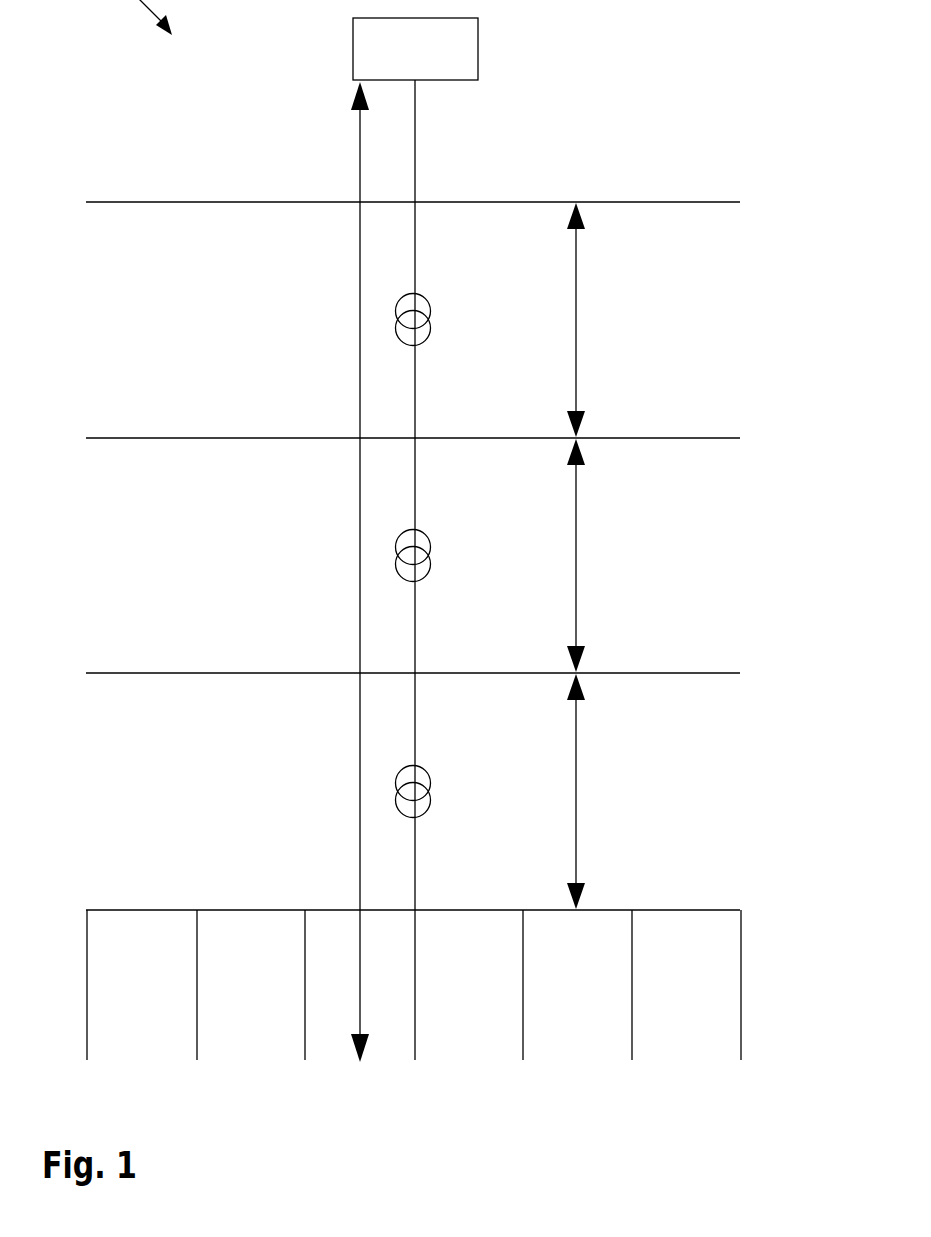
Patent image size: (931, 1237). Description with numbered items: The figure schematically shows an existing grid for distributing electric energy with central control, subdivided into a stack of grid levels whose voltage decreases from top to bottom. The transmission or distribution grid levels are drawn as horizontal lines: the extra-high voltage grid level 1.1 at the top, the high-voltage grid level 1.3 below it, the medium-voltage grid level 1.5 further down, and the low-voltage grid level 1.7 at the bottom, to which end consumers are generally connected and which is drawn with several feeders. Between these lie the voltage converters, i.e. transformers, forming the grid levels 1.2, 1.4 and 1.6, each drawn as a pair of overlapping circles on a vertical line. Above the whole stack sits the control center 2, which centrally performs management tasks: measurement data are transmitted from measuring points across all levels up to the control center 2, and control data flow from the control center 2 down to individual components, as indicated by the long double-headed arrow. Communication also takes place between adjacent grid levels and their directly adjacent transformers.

The control center 2 is at (415, 49).
The grid level (extra-high voltage grid) 1.1 is at (727, 201).
The grid level (voltage converter) 1.2 is at (432, 326).
The grid level (high-voltage grid) 1.3 is at (727, 437).
The grid level (voltage converter) 1.4 is at (432, 562).
The grid level (medium-voltage grid) 1.5 is at (727, 672).
The grid level (voltage converter) 1.6 is at (432, 798).
The grid level (low-voltage grid) 1.7 is at (727, 909).